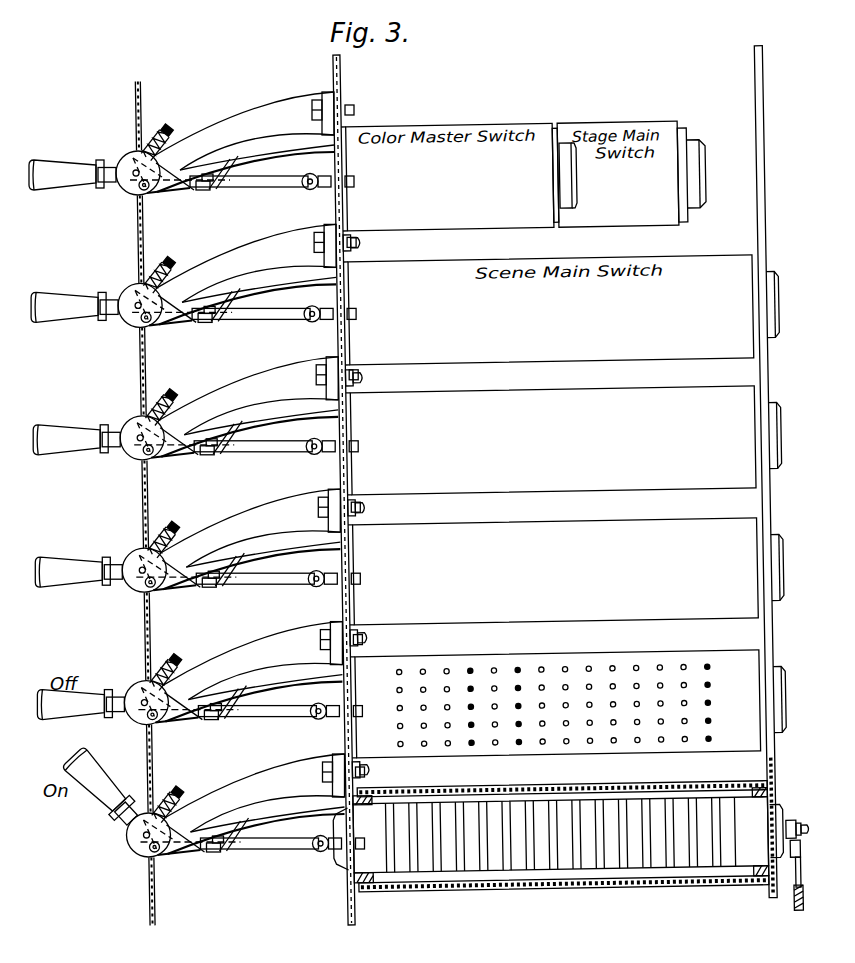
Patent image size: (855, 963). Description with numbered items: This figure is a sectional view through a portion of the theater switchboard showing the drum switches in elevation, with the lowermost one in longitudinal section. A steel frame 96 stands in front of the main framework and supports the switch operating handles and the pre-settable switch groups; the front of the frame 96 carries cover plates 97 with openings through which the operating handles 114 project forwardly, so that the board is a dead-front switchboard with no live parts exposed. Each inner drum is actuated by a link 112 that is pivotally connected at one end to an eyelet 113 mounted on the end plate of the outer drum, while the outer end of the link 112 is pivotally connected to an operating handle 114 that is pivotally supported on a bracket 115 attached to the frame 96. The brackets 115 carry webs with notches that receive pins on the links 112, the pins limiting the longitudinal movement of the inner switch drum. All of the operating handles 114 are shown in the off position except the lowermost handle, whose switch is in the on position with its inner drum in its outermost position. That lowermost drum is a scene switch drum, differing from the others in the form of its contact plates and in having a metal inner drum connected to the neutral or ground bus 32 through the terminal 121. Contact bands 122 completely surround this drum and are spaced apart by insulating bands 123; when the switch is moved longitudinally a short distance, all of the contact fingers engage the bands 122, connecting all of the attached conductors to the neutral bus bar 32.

The neutral or ground bus 32 is at (806, 914).
The steel frame 96 is at (343, 70).
The cover plates 97 is at (137, 227).
The link 112 is at (270, 188).
The eyelet 113 is at (306, 190).
The operating handle 114 is at (78, 184).
The bracket 115 is at (234, 114).
The terminal 121 is at (796, 823).
The contact bands 122 is at (428, 871).
The insulating bands 123 is at (648, 661).